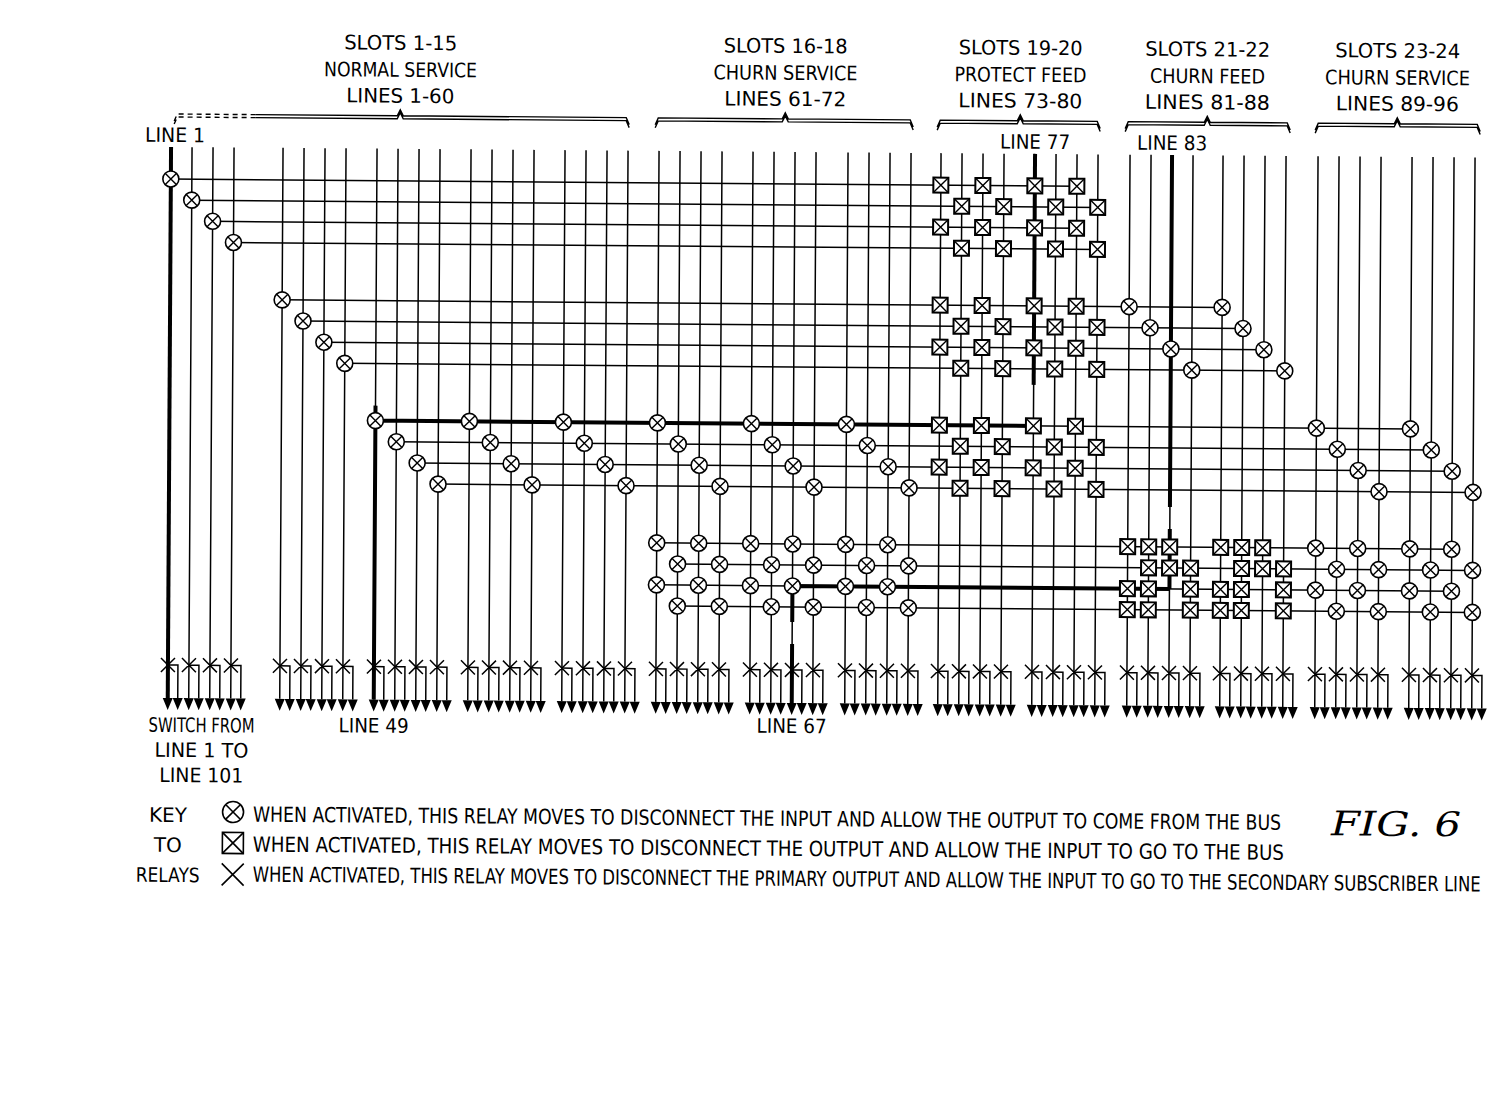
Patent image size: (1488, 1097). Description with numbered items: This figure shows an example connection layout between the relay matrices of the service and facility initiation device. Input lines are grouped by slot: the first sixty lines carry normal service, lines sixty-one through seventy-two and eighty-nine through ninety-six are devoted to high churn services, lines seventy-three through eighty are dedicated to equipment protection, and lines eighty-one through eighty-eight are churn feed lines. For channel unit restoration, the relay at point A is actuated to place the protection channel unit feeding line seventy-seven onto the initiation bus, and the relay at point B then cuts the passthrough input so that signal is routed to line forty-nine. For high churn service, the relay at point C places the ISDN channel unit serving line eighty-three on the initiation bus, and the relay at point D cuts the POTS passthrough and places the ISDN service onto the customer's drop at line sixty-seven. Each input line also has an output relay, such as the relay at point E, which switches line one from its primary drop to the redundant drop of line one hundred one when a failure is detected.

The relay at point A is at (1035, 281).
The relay at point B is at (698, 544).
The relay at point C is at (1170, 372).
The relay at point D is at (975, 646).
The relay at point E is at (152, 422).